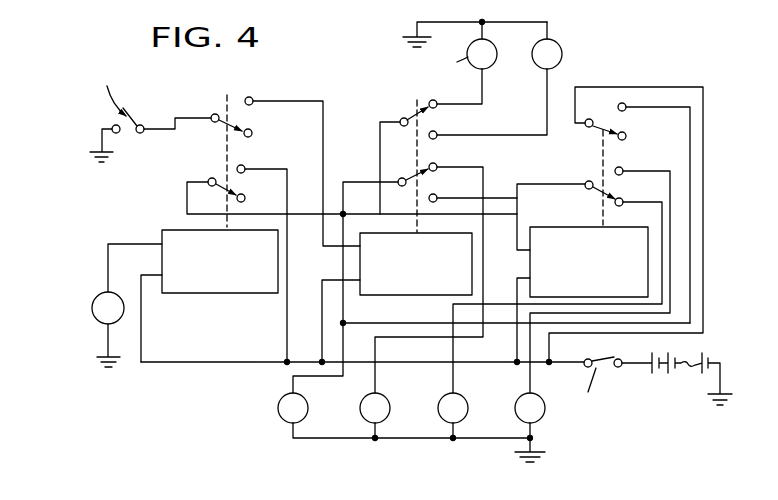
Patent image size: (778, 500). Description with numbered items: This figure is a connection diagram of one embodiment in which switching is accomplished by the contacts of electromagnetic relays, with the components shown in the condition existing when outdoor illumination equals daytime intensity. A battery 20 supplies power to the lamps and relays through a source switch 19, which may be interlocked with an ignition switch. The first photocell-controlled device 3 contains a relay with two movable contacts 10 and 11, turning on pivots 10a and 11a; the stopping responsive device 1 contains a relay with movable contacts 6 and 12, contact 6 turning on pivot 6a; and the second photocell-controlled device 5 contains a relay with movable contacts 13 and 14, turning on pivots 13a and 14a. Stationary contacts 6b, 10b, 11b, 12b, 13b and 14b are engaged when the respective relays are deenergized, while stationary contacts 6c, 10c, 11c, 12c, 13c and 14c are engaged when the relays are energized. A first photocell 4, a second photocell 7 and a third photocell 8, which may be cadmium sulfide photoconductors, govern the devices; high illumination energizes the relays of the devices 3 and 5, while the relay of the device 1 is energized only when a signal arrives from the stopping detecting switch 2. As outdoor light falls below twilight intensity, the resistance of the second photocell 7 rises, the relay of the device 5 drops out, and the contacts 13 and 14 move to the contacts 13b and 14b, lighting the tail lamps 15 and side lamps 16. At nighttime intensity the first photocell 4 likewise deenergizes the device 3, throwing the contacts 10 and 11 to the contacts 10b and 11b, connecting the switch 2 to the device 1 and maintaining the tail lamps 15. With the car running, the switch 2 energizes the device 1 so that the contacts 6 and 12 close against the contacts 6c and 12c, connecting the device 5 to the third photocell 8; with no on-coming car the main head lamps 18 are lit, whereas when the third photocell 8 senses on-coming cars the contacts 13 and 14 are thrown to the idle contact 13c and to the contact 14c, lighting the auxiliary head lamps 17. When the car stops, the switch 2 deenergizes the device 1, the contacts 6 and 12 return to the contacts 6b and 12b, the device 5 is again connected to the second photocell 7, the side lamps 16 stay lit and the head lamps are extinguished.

The stopping responsive device 1 is at (401, 296).
The stopping detecting switch 2 is at (128, 118).
The first photocell-controlled device 3 is at (198, 294).
The first photocell 4 is at (120, 325).
The second photocell-controlled device 5 is at (530, 267).
The movable contact 6 is at (416, 117).
The pivot of movable contact 6a is at (404, 157).
The stationary contact 6b is at (443, 98).
The stationary contact 6c is at (444, 126).
The second photocell 7 is at (467, 54).
The third photocell 8 is at (562, 54).
The movable contact 10 is at (229, 104).
The pivot of movable contact 10a is at (217, 113).
The stationary contact 10b is at (302, 162).
The stationary contact 10c is at (263, 127).
The movable contact 11 is at (219, 181).
The pivot of movable contact 11a is at (265, 198).
The stationary contact 11b is at (262, 254).
The stationary contact 11c is at (255, 198).
The movable contact 12 is at (408, 180).
The stationary contact 12b is at (429, 270).
The stationary contact 12c is at (473, 190).
The movable contact 13 is at (602, 128).
The pivot of movable contact 13a is at (626, 224).
The stationary contact 13b is at (654, 213).
The stationary contact 13c is at (636, 144).
The movable contact 14 is at (598, 192).
The pivot of movable contact 14a is at (566, 263).
The stationary contact 14b is at (600, 280).
The stationary contact 14c is at (557, 295).
The tail lamps 15 is at (286, 424).
The side lamps 16 is at (368, 424).
The auxiliary head lamps 17 is at (446, 424).
The main head lamps 18 is at (539, 422).
The source switch 19 is at (602, 370).
The battery 20 is at (677, 379).